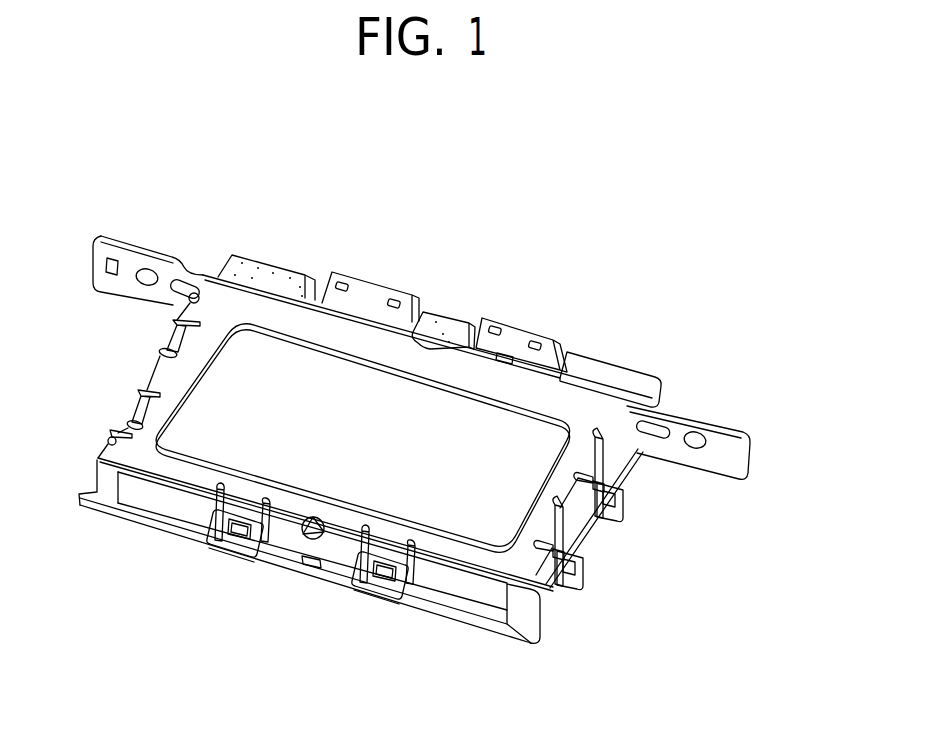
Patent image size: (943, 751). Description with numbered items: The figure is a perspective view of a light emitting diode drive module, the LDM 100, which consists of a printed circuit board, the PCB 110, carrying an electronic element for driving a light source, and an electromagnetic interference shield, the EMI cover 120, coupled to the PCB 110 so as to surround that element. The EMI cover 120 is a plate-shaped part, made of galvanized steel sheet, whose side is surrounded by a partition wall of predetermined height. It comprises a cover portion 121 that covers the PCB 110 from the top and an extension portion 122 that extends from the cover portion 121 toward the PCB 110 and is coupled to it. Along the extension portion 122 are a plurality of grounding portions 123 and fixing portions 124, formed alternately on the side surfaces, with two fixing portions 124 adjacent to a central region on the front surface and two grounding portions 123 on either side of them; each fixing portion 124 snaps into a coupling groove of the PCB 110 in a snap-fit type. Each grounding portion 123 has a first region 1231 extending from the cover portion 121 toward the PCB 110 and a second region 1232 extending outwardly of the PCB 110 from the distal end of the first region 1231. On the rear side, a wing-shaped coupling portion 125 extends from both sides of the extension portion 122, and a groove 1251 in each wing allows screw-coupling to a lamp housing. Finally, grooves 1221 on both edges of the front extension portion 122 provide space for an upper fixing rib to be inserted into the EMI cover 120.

The LED drive module 100 is at (777, 203).
The printed circuit board 110 is at (610, 375).
The EMI cover 120 is at (482, 377).
The cover portion 121 is at (338, 377).
The extension portion 122 is at (375, 554).
The groove 1221 is at (112, 493).
The grounding portion 123 is at (403, 548).
The first region 1231 is at (210, 520).
The second region 1232 is at (240, 547).
The fixing portion 124 is at (333, 553).
The coupling portion 125 is at (170, 270).
The groove 1251 is at (148, 273).